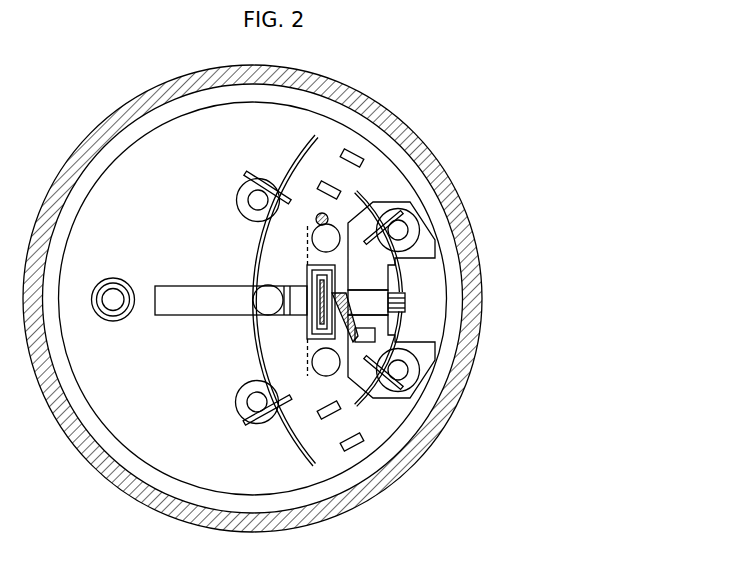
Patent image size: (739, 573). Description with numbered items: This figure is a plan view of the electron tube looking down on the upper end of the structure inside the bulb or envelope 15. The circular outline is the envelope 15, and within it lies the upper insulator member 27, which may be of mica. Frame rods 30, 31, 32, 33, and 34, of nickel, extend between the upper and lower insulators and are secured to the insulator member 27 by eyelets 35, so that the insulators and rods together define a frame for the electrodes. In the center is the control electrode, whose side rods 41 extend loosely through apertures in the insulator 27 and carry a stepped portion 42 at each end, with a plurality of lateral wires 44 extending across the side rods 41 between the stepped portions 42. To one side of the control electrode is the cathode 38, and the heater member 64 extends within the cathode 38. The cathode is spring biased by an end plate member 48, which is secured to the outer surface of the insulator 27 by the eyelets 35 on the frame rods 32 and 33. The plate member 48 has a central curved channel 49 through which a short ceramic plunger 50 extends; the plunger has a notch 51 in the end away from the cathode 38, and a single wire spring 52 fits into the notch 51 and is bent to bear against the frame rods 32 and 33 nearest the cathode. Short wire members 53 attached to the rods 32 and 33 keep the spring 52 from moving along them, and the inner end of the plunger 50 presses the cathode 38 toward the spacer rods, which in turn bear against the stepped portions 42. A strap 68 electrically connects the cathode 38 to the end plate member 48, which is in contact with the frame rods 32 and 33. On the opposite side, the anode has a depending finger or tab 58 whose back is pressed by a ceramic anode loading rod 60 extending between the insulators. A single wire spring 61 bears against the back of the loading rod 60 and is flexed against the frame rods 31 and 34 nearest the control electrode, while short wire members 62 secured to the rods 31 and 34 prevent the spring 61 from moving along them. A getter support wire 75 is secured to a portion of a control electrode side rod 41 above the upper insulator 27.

The bulb or envelope 15 is at (407, 128).
The upper insulator member 27 is at (342, 138).
The frame rod 30 is at (113, 293).
The frame rod 31 is at (249, 203).
The frame rod 32 is at (406, 226).
The frame rod 33 is at (406, 373).
The frame rod 34 is at (248, 402).
The eyelet 35 is at (237, 191).
The cathode 38 is at (317, 312).
The side rod 41 is at (336, 245).
The stepped portion 42 is at (306, 244).
The lateral wire 44 is at (243, 299).
The end plate member 48 is at (436, 347).
The central curved channel 49 is at (365, 293).
The ceramic plunger 50 is at (406, 300).
The notch 51 is at (406, 313).
The wire spring 52 is at (401, 278).
The short wire member 53 is at (387, 222).
The depending finger or tab 58 is at (292, 288).
The anode loading rod 60 is at (253, 282).
The wire spring 61 is at (252, 338).
The short wire member 62 is at (263, 175).
The heater member 64 is at (307, 268).
The strap 68 is at (342, 314).
The getter support wire 75 is at (316, 220).